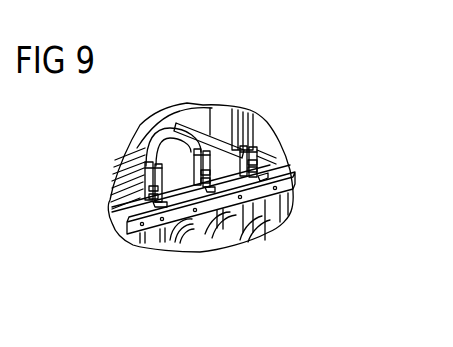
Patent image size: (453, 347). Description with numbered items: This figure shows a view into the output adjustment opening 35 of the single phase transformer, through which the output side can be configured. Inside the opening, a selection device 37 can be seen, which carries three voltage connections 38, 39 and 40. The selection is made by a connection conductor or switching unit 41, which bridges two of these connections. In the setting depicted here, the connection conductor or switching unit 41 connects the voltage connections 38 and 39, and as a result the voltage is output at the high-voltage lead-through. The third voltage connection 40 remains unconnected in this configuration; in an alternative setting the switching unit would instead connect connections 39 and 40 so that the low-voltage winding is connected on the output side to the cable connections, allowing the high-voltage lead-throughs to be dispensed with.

The output adjustment opening 35 is at (254, 103).
The selection device 37 is at (235, 108).
The voltage connection 38 is at (148, 189).
The voltage connection 39 is at (215, 176).
The voltage connection 40 is at (273, 162).
The connection conductor or switching unit 41 is at (184, 113).